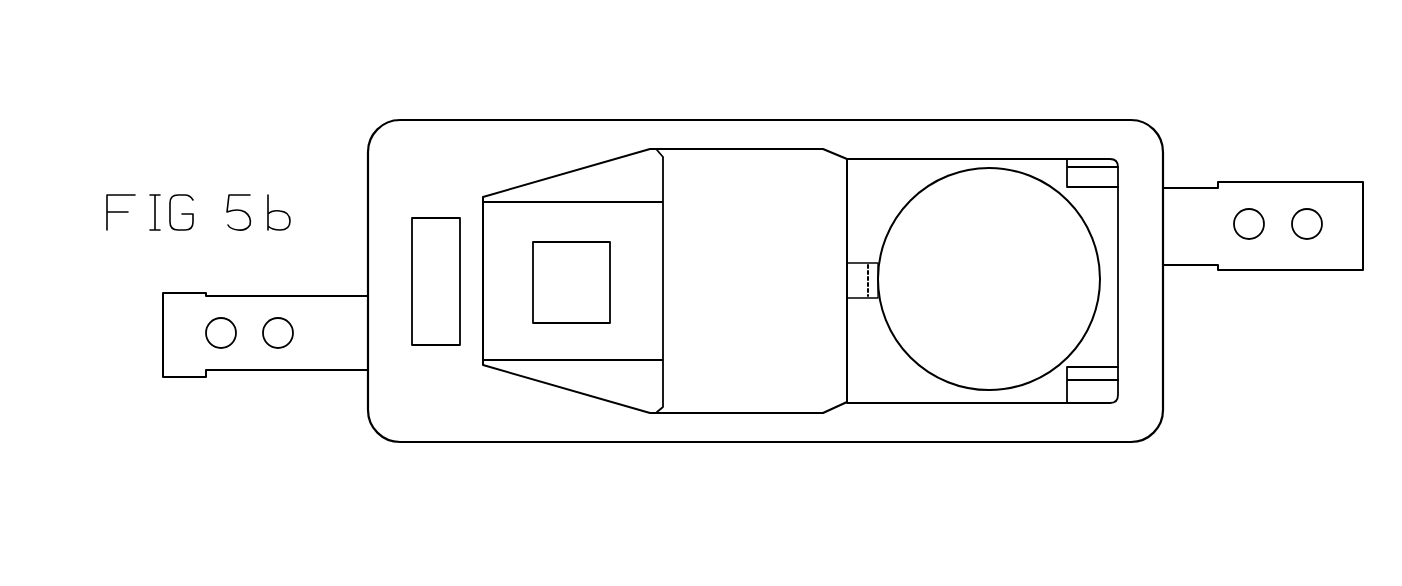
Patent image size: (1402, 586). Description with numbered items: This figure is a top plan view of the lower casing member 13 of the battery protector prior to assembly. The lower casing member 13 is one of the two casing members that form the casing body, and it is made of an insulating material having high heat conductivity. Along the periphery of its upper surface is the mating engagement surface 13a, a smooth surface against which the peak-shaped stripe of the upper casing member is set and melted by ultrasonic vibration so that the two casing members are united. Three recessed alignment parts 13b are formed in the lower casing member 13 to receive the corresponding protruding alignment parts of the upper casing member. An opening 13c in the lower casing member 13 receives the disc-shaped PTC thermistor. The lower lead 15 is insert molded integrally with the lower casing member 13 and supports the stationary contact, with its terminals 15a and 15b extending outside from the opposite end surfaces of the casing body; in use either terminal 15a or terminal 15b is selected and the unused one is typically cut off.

The lower casing member 13 is at (633, 120).
The mating engagement surface 13a is at (423, 140).
The recessed alignment parts 13b is at (1093, 175).
The opening 13c is at (985, 170).
The lower lead 15 is at (633, 338).
The terminal 15a is at (1307, 195).
The terminal 15b is at (250, 358).